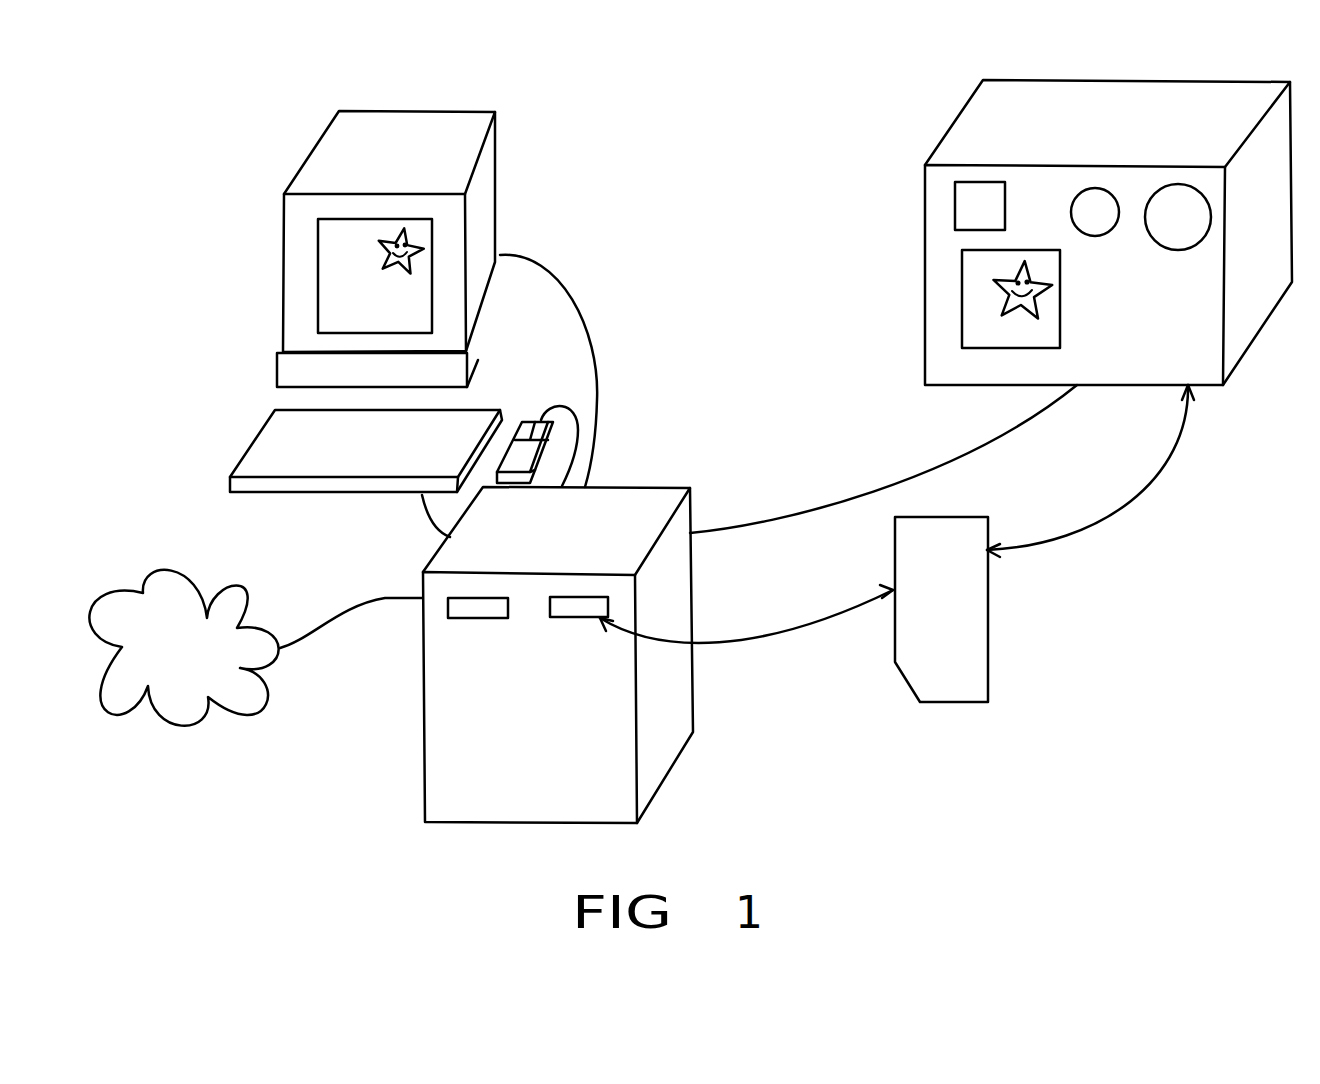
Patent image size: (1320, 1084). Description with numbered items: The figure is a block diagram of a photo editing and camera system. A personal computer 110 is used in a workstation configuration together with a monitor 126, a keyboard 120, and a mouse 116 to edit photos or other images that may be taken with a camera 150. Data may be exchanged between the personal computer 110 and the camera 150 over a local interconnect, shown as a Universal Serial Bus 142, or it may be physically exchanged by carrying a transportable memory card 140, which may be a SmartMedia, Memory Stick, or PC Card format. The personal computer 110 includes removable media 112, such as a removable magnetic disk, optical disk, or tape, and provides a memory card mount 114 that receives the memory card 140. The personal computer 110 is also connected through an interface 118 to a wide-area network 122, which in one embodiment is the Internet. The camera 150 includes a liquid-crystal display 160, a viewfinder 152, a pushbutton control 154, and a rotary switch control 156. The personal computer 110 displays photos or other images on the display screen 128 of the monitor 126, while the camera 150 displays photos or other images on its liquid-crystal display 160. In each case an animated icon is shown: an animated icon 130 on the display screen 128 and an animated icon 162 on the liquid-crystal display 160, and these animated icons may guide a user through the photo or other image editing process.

The personal computer 110 is at (423, 745).
The removable media 112 is at (473, 619).
The memory card mount 114 is at (577, 618).
The mouse 116 is at (533, 413).
The interface 118 is at (365, 602).
The keyboard 120 is at (327, 495).
The wide-area network 122 is at (160, 720).
The monitor 126 is at (280, 335).
The display screen 128 is at (348, 265).
The animated icon 130 is at (410, 231).
The memory card 140 is at (953, 705).
The Universal Serial Bus 142 is at (832, 508).
The camera 150 is at (925, 260).
The viewfinder 152 is at (960, 205).
The pushbutton control 154 is at (1095, 189).
The rotary switch control 156 is at (1190, 183).
The liquid-crystal display 160 is at (962, 320).
The animated icon 162 is at (1010, 297).